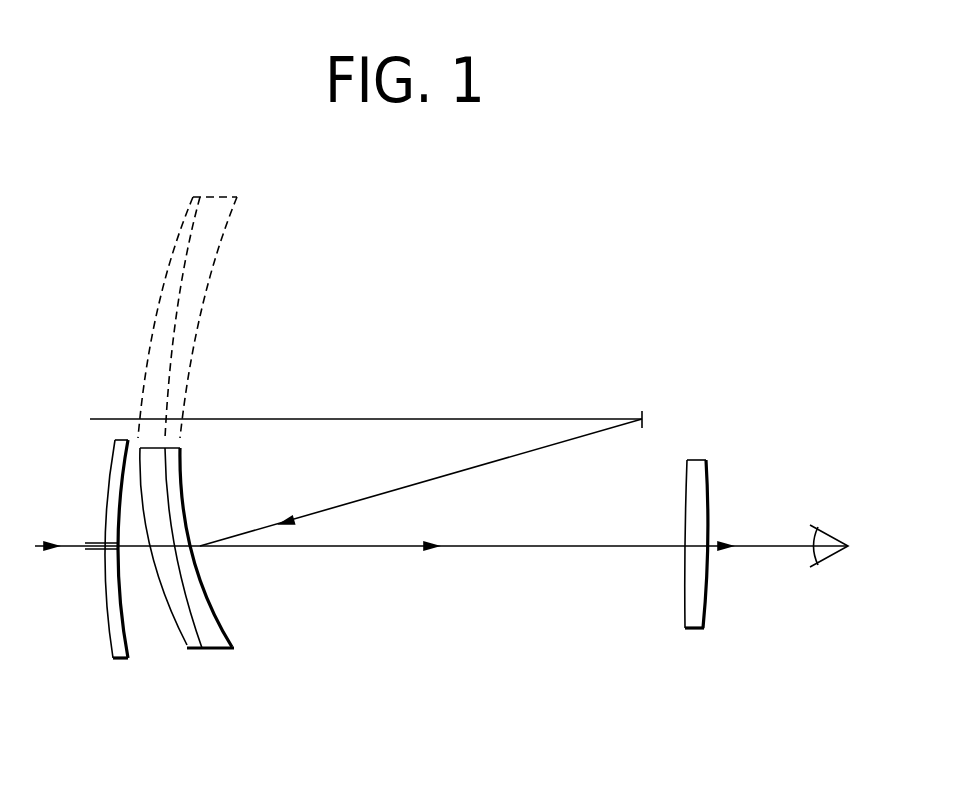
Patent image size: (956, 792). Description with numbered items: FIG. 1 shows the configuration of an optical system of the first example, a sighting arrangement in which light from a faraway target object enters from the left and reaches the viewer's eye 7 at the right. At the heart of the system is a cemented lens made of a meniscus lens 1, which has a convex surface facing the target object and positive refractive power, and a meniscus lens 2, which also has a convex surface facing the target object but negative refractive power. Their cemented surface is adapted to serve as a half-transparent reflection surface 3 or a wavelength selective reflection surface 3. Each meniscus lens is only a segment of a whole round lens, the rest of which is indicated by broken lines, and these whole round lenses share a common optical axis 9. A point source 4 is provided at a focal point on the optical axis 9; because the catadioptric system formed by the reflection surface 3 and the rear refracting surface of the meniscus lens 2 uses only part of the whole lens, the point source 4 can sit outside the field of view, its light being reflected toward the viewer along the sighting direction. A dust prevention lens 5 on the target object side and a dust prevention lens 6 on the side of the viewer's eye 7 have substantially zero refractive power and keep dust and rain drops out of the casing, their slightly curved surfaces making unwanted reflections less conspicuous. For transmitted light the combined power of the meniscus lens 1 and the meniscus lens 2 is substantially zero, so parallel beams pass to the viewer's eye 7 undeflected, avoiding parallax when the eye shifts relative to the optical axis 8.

The meniscus lens 1 is at (184, 633).
The meniscus lens 2 is at (233, 650).
The half-transparent reflection surface 3 is at (190, 615).
The point source 4 is at (642, 419).
The dust prevention lens 5 is at (120, 660).
The dust prevention lens 6 is at (694, 630).
The viewer's eye 7 is at (838, 552).
The optical axis 8 is at (100, 552).
The optical axis 9 is at (290, 419).